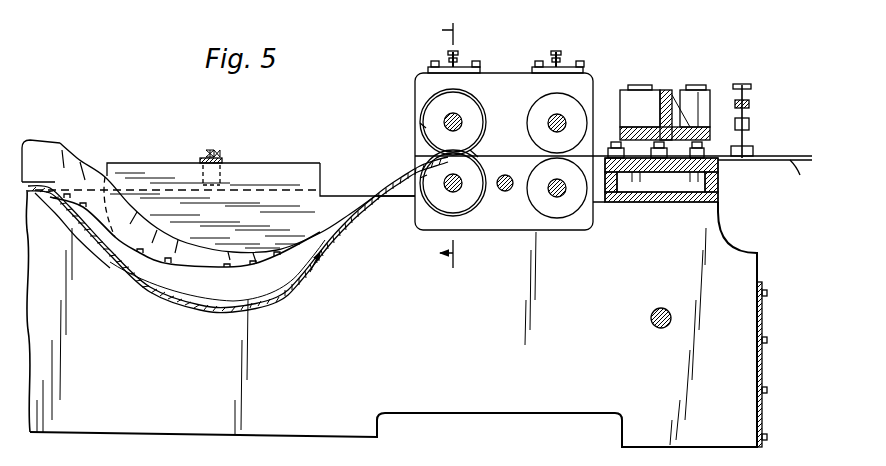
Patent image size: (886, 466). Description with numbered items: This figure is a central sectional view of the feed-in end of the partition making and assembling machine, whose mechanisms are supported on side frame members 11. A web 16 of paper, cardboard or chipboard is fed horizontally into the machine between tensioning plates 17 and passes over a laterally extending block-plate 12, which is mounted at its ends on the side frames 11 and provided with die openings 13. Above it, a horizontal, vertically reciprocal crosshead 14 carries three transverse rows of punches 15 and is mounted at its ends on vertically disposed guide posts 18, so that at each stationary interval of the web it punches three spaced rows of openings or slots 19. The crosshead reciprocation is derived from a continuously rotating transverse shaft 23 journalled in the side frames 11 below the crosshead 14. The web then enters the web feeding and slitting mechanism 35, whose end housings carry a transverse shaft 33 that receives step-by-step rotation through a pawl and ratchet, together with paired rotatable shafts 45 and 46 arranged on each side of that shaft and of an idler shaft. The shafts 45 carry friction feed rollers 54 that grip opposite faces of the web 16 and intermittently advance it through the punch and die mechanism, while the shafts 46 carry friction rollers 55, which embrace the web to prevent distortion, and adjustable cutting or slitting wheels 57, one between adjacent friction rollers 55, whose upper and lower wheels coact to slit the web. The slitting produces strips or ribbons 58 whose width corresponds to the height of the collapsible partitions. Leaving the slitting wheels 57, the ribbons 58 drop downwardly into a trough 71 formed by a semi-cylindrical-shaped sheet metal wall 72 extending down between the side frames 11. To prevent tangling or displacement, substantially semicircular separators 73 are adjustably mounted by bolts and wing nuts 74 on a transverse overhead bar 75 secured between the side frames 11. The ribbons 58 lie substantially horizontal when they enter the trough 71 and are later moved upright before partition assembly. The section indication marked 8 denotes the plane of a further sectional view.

The side frame members 11 is at (345, 197).
The openings or slots 19 is at (88, 165).
The separators 73 is at (145, 163).
The bolts and wing nuts 74 is at (213, 152).
The transverse overhead bar 75 is at (220, 160).
The strips or ribbons 58 is at (243, 250).
The semi-cylindrical-shaped sheet metal wall 72 is at (266, 308).
The trough 71 is at (314, 283).
The web feeding and slitting mechanism 35 is at (506, 88).
The section line 8 is at (453, 141).
The rotatable shafts 46 is at (463, 113).
The feed rollers 54 is at (571, 170).
The cutting or slitting wheels 57 is at (418, 176).
The friction rollers 55 is at (473, 136).
The rotatable shafts 45 is at (549, 184).
The transverse shaft 33 is at (508, 191).
The tensioning plates 17 is at (763, 153).
The web 16 is at (797, 158).
The guide posts 18 is at (640, 88).
The crosshead 14 is at (667, 95).
The die openings 13 is at (662, 148).
The block-plate 12 is at (690, 172).
The punches 15 is at (700, 154).
The transverse shaft 23 is at (663, 326).